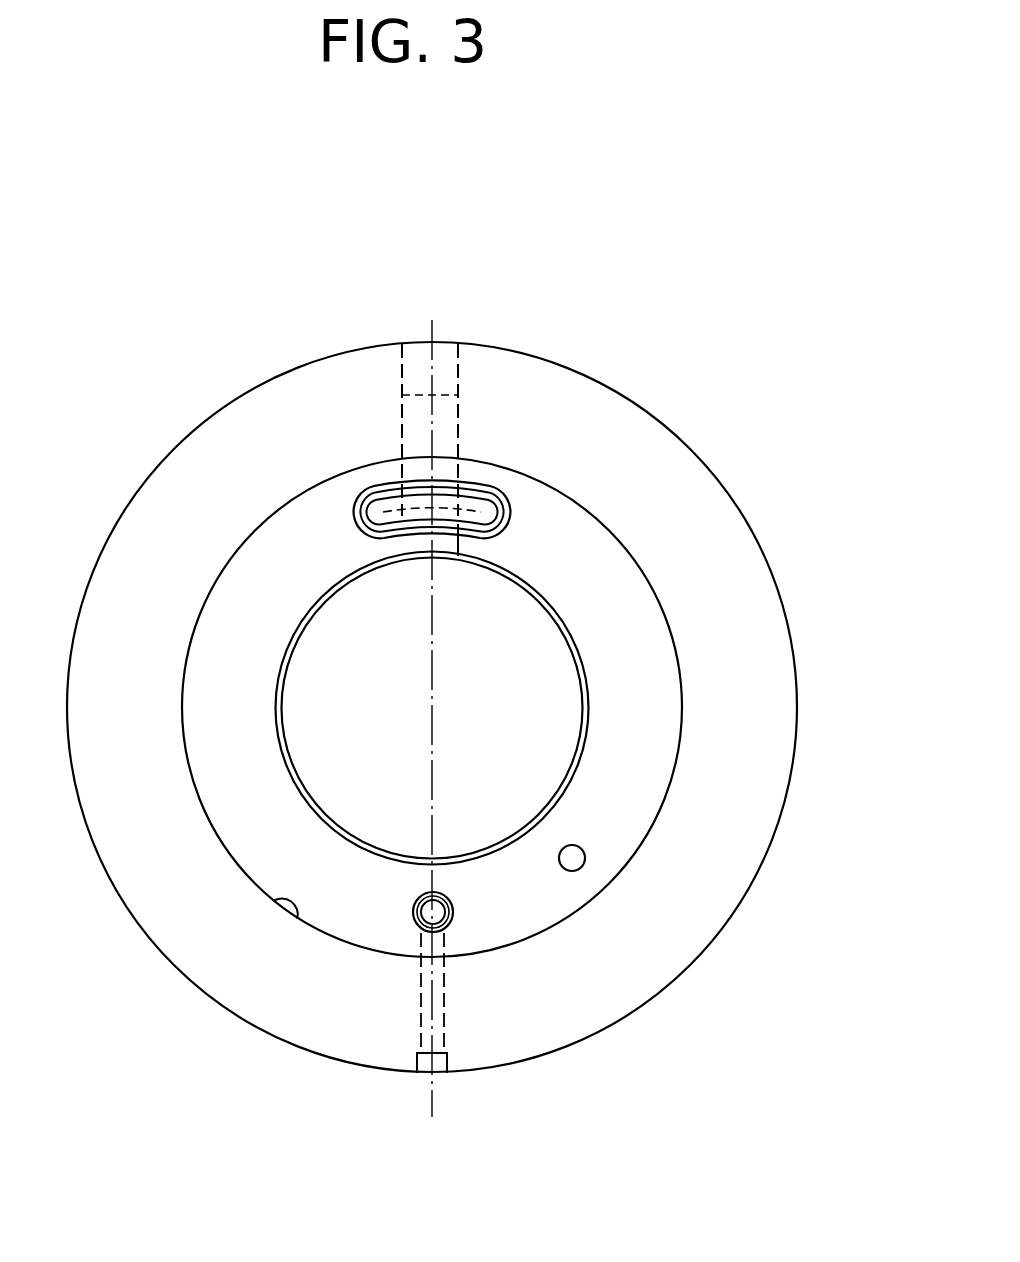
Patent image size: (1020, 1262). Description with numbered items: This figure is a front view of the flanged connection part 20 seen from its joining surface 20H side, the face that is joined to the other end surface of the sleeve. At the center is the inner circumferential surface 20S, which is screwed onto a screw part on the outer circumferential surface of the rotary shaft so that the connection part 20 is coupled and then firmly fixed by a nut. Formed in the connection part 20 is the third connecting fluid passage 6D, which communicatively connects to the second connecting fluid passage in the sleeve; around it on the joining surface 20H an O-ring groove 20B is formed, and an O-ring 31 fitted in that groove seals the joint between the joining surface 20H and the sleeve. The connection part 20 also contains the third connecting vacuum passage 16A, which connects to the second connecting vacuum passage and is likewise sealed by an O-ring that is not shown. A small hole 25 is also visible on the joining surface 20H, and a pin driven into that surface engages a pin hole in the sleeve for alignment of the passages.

The connection part 20 is at (276, 356).
The third connecting fluid passage 6D is at (393, 492).
The O-ring 31 is at (503, 487).
The O-ring groove 20B is at (459, 558).
The inner circumferential surface 20S is at (306, 784).
The hole 25 is at (561, 847).
The joining surface 20H is at (303, 923).
The third connecting vacuum passage 16A is at (472, 1003).